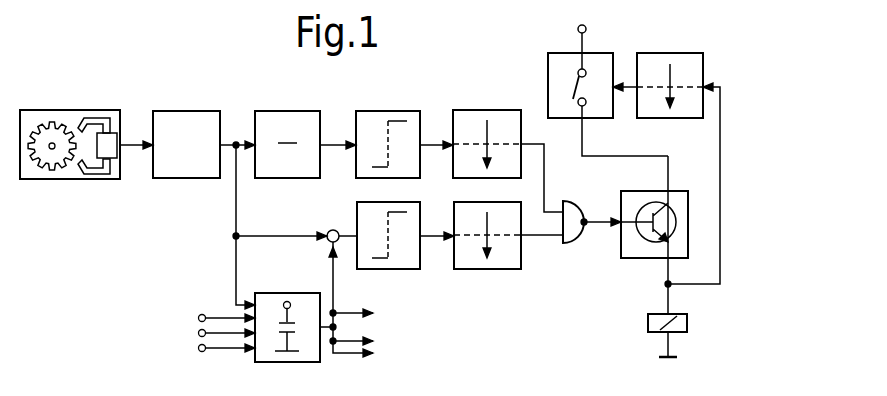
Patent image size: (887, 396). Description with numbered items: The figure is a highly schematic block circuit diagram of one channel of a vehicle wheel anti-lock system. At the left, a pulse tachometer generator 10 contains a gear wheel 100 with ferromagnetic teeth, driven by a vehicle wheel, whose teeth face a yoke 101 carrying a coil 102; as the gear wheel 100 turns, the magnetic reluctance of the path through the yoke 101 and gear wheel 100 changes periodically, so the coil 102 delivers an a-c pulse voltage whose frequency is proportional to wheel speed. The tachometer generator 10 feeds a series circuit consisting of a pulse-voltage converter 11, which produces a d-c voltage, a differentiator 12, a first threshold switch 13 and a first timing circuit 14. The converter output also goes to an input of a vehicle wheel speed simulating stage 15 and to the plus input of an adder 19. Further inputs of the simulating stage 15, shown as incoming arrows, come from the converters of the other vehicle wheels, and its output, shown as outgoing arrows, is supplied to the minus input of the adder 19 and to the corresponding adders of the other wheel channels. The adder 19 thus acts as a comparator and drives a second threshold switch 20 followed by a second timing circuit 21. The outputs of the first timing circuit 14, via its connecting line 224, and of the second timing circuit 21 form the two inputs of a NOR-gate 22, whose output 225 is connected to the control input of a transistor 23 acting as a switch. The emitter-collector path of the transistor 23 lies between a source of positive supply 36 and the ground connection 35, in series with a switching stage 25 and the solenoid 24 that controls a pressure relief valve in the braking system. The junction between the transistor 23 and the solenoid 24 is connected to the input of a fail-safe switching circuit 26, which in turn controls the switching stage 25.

The pulse tachometer generator 10 is at (75, 110).
The gear wheel 100 is at (49, 174).
The yoke 101 is at (81, 174).
The coil 102 is at (114, 151).
The pulse-voltage converter 11 is at (182, 111).
The differentiator 12 is at (279, 111).
The first threshold switch 13 is at (383, 111).
The first timing circuit 14 is at (482, 110).
The vehicle wheel speed simulating stage 15 is at (272, 293).
The adder 19 is at (335, 230).
The second threshold switch 20 is at (381, 269).
The second timing circuit 21 is at (478, 264).
The NOR-gate 22 is at (565, 243).
The connecting line 224 is at (544, 170).
The output 225 is at (597, 228).
The transistor 23 is at (655, 258).
The solenoid 24 is at (648, 323).
The switching stage 25 is at (597, 60).
The fail-safe switching circuit 26 is at (673, 53).
The ground connection 35 is at (666, 355).
The source of positive supply 36 is at (578, 27).